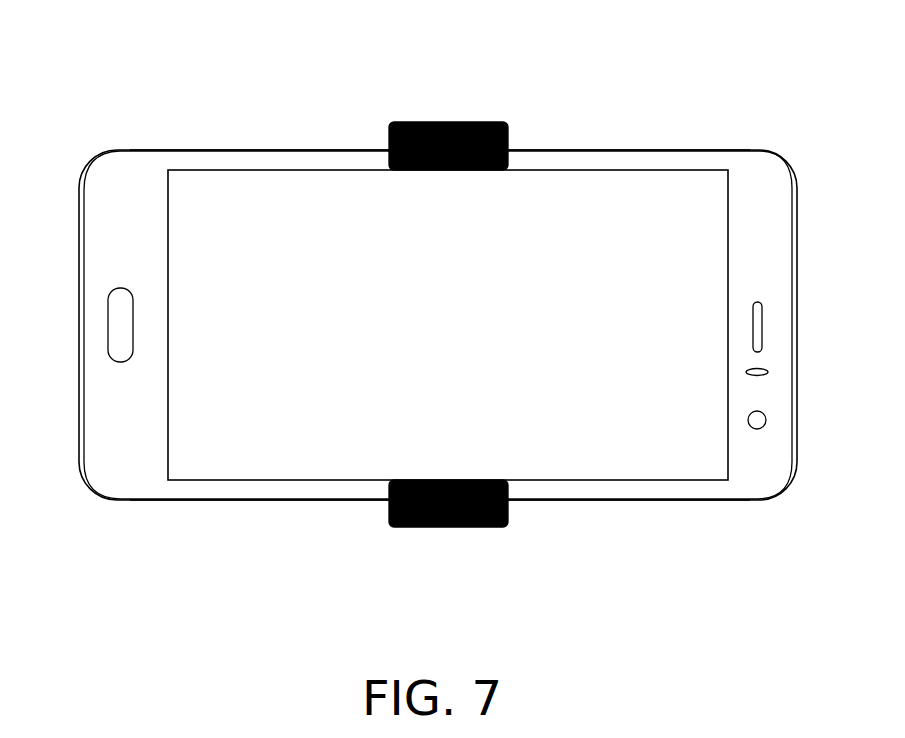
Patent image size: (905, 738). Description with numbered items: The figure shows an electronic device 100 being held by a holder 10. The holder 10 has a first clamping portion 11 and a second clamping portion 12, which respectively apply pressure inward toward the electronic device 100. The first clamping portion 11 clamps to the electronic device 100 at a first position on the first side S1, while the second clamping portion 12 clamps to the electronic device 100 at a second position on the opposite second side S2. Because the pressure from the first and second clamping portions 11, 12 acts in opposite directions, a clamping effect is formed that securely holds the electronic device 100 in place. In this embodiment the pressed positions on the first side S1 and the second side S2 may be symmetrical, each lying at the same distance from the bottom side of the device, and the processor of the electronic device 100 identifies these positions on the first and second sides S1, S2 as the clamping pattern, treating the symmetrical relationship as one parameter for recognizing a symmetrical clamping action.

The holder 10 is at (270, 326).
The first clamping portion 11 is at (447, 122).
The second clamping portion 12 is at (441, 527).
The electronic device 100 is at (770, 178).
The first side S1 is at (597, 150).
The second side S2 is at (614, 500).